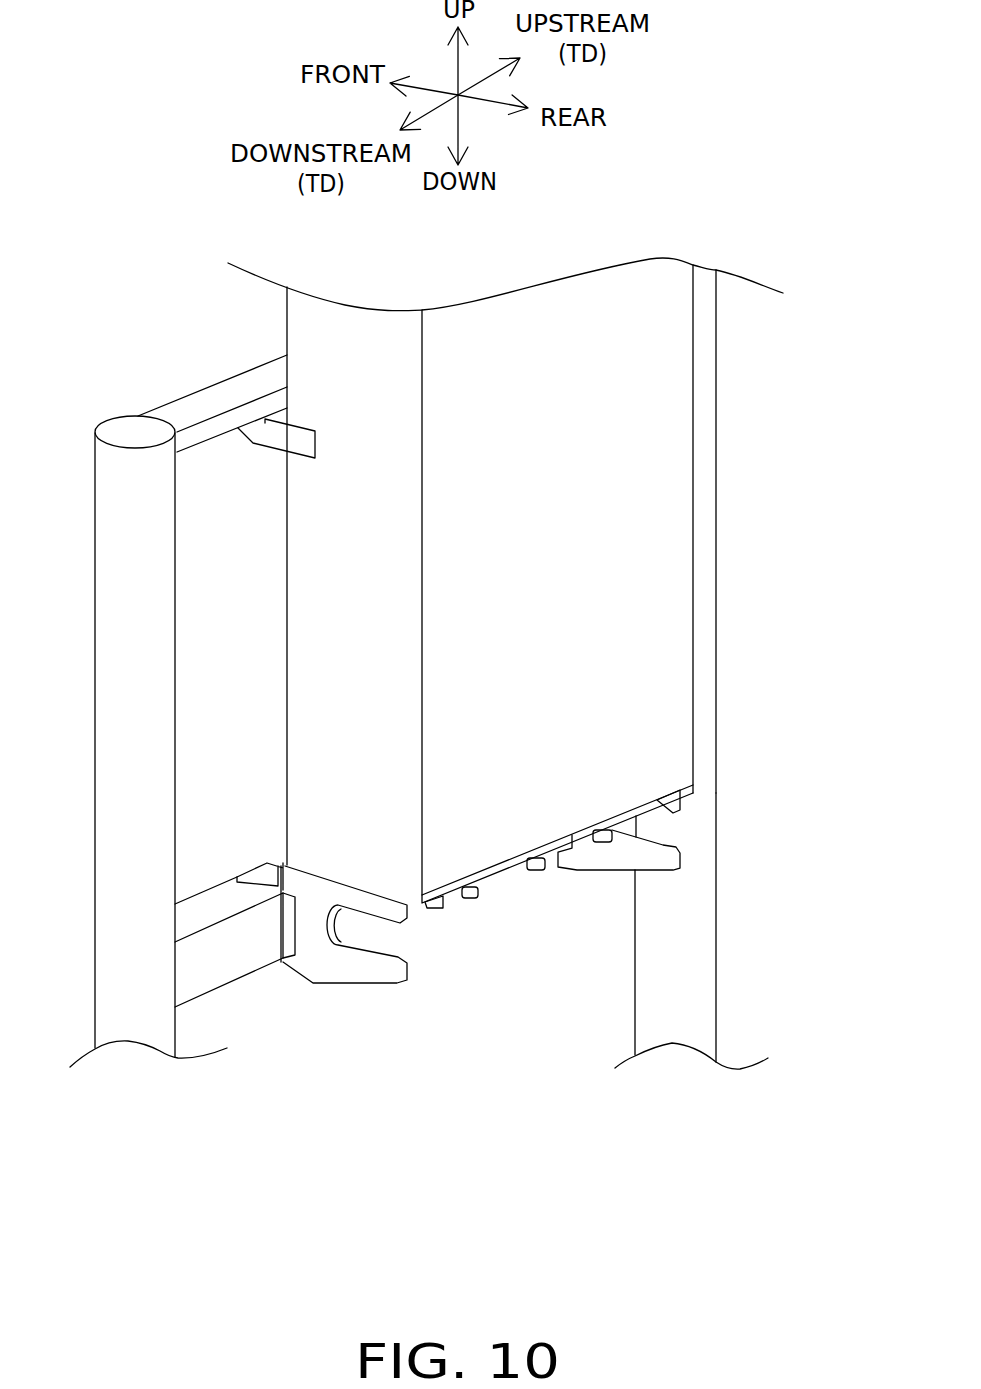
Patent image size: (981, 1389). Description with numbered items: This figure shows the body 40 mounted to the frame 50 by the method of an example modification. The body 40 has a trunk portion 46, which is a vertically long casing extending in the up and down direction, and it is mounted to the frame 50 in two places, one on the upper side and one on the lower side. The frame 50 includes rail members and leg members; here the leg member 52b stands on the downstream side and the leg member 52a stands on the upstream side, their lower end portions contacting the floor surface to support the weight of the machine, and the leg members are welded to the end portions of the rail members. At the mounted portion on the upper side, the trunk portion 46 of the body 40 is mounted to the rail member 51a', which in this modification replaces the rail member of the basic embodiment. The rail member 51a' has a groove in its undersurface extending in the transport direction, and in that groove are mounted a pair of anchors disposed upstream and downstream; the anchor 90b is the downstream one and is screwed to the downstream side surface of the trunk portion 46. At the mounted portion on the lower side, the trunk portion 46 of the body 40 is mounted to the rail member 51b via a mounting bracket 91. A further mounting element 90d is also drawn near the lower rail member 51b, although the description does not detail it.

The body 40 is at (585, 326).
The trunk portion 46 is at (587, 530).
The frame 50 is at (209, 289).
The rail member 51a' is at (173, 364).
The rail member 51b is at (220, 963).
The leg member 52a is at (677, 957).
The leg member 52b is at (133, 692).
The anchor 90b is at (293, 442).
The lower positioning bracket 90d is at (260, 833).
The mounting bracket 91 is at (357, 973).